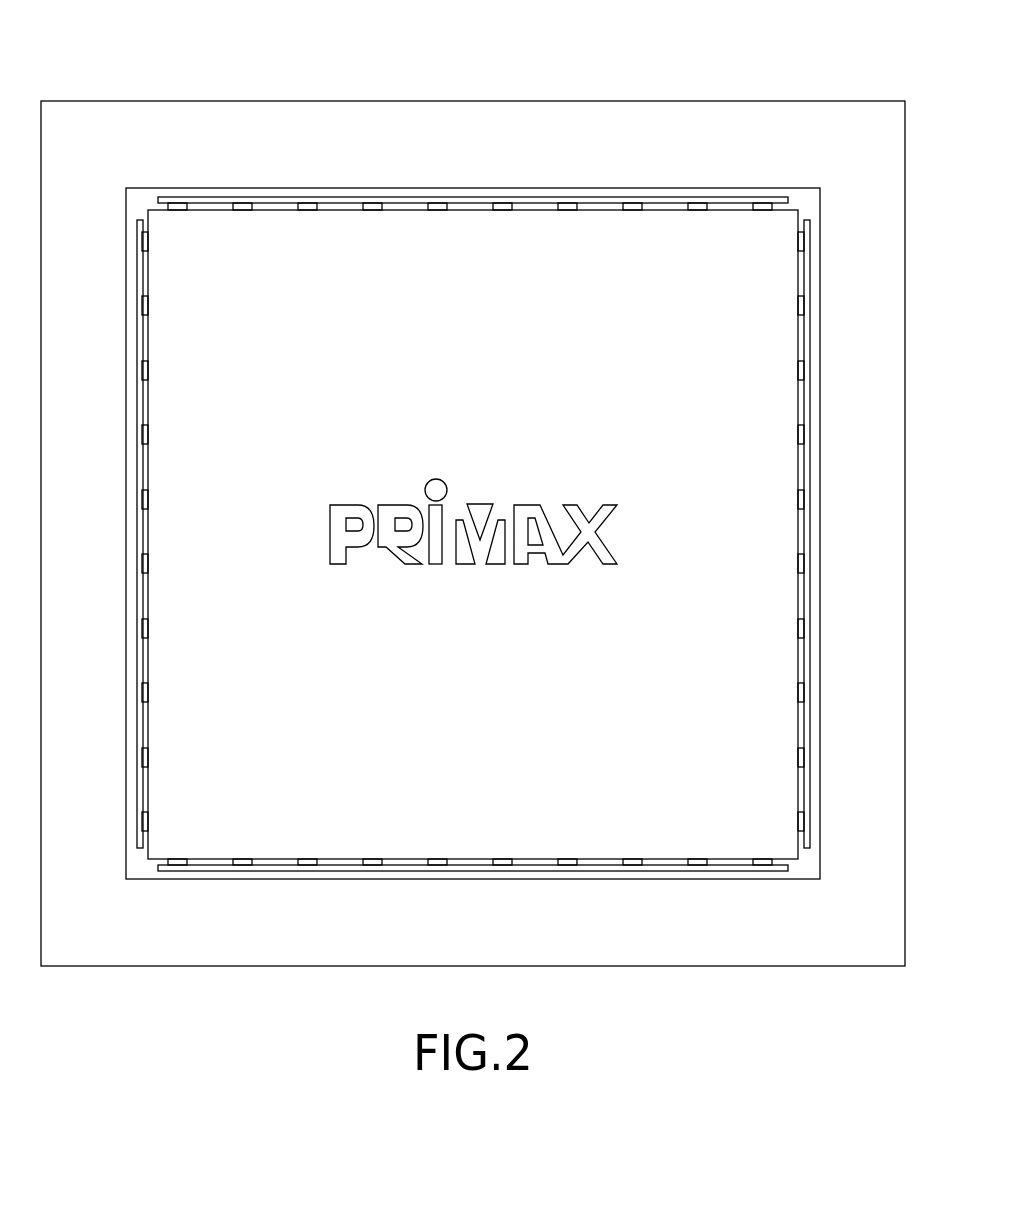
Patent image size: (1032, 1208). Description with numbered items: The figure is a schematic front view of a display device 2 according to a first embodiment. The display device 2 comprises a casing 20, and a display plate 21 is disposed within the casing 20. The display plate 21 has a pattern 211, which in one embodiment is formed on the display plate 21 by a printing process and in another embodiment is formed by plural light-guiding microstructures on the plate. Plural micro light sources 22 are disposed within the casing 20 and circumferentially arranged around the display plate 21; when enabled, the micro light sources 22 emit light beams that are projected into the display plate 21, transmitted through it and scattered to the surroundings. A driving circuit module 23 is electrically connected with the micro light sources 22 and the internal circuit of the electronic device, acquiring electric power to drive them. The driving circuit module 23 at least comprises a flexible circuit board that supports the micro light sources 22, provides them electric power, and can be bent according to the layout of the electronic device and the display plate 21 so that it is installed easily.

The display device 2 is at (277, 33).
The casing 20 is at (742, 113).
The display plate 21 is at (655, 245).
The pattern 211 is at (523, 507).
The micro light sources 22 is at (243, 203).
The driving circuit module 23 is at (538, 199).